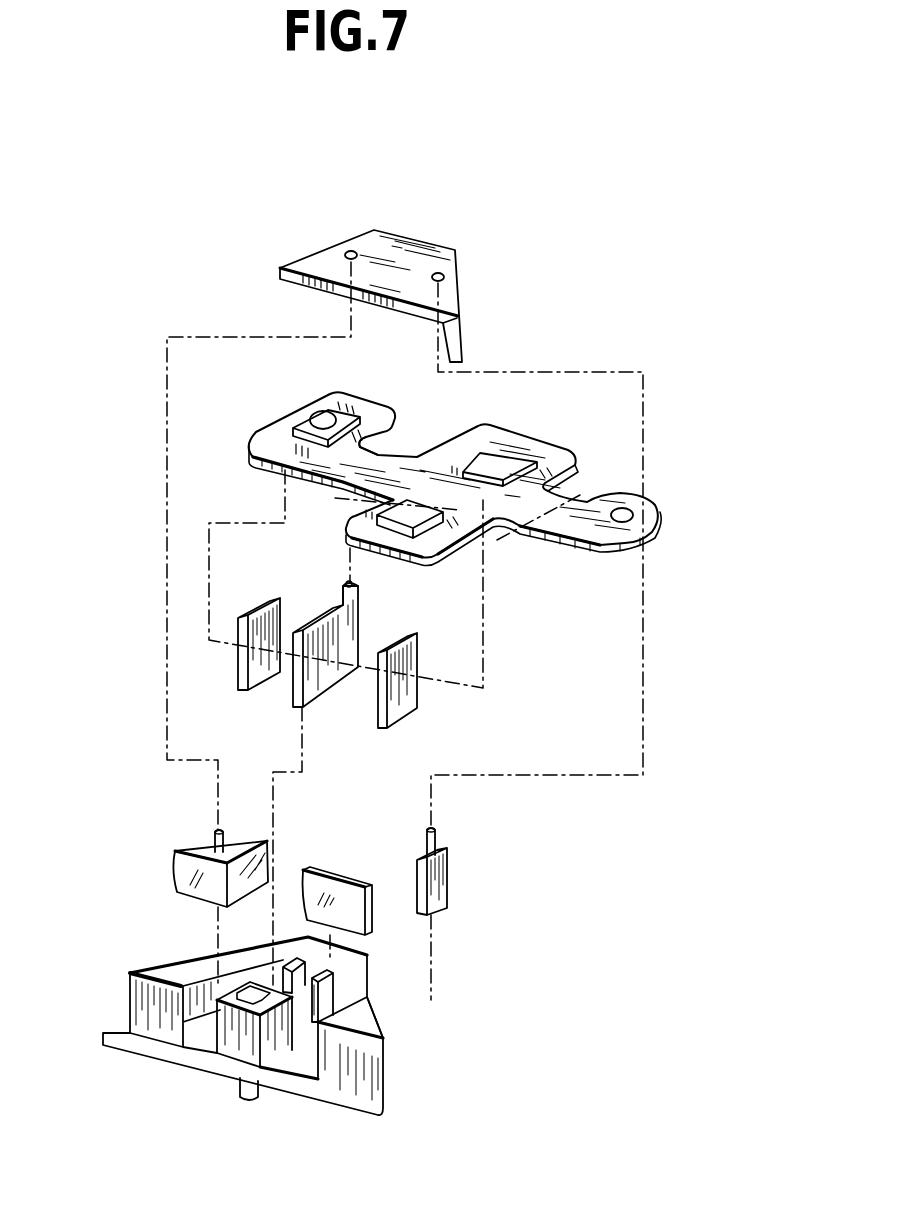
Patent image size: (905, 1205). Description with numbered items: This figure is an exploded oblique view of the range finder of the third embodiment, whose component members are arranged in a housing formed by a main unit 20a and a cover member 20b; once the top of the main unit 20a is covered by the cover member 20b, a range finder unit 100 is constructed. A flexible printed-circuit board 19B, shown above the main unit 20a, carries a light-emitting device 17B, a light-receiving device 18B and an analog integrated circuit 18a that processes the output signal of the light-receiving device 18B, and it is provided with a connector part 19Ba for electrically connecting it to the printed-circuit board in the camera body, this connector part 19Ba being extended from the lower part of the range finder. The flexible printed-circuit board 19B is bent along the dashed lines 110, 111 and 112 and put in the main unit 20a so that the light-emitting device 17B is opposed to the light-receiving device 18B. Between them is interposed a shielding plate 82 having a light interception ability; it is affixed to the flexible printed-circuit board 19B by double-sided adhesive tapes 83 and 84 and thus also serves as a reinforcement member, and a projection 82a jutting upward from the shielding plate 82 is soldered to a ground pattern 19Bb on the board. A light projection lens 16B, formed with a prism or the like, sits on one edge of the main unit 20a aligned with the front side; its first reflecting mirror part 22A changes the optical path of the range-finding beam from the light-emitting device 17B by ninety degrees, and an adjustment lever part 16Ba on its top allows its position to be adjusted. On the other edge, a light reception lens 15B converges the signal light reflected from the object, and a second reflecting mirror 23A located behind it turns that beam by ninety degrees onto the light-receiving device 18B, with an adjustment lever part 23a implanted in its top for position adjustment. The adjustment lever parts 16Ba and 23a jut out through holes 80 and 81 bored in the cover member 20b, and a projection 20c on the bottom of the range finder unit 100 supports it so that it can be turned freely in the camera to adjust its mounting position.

The hole 80 is at (351, 250).
The hole 81 is at (439, 272).
The cover member 20b is at (452, 297).
The light-emitting device 17B is at (320, 418).
The ground pattern 19Bb is at (378, 457).
The bending line 110 is at (404, 446).
The light-receiving device 18B is at (512, 458).
The bending line 111 is at (588, 488).
The connector part 19Ba is at (628, 513).
The flexible printed-circuit board 19B is at (645, 542).
The projection 82a is at (345, 580).
The analog integrated circuit 18a is at (428, 540).
The bending line 112 is at (463, 506).
The double-sided adhesive tape 83 is at (265, 672).
The shielding plate 82 is at (320, 672).
The double-sided adhesive tape 84 is at (405, 708).
The first reflecting mirror part 22A is at (192, 834).
The adjustment lever part 16Ba is at (221, 828).
The light projection lens 16B is at (182, 880).
The adjustment lever part 23a is at (434, 828).
The second reflecting mirror 23A is at (442, 890).
The light reception lens 15B is at (355, 912).
The main unit 20a is at (145, 1003).
The range finder unit 100 is at (142, 1058).
The projection 20c is at (243, 1097).